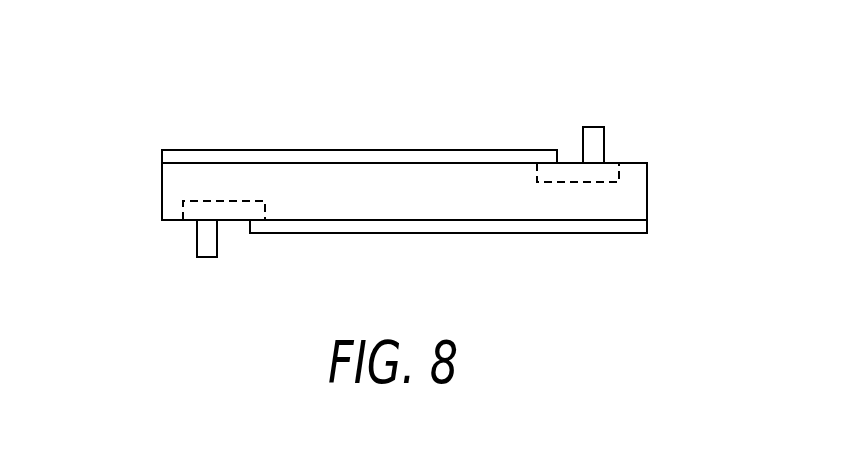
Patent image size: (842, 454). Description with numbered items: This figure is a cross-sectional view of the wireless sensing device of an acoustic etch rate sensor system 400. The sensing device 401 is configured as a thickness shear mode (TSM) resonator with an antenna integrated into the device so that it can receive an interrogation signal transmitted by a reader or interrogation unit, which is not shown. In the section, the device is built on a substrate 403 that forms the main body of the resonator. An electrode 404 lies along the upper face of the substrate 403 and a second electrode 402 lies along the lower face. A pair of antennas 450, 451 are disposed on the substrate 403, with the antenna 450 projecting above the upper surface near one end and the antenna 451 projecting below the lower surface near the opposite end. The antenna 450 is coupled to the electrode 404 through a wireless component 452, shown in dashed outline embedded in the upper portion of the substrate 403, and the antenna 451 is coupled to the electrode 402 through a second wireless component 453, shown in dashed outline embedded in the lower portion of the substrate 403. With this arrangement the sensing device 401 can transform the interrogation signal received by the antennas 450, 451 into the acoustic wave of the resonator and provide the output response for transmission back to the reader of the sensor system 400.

The sensor system 400 is at (625, 76).
The sensing device 401 is at (162, 185).
The electrode 402 is at (455, 233).
The substrate 403 is at (620, 200).
The electrode 404 is at (393, 150).
The antenna 450 is at (604, 138).
The antenna 451 is at (197, 242).
The wireless component 452 is at (648, 178).
The wireless component 453 is at (162, 208).